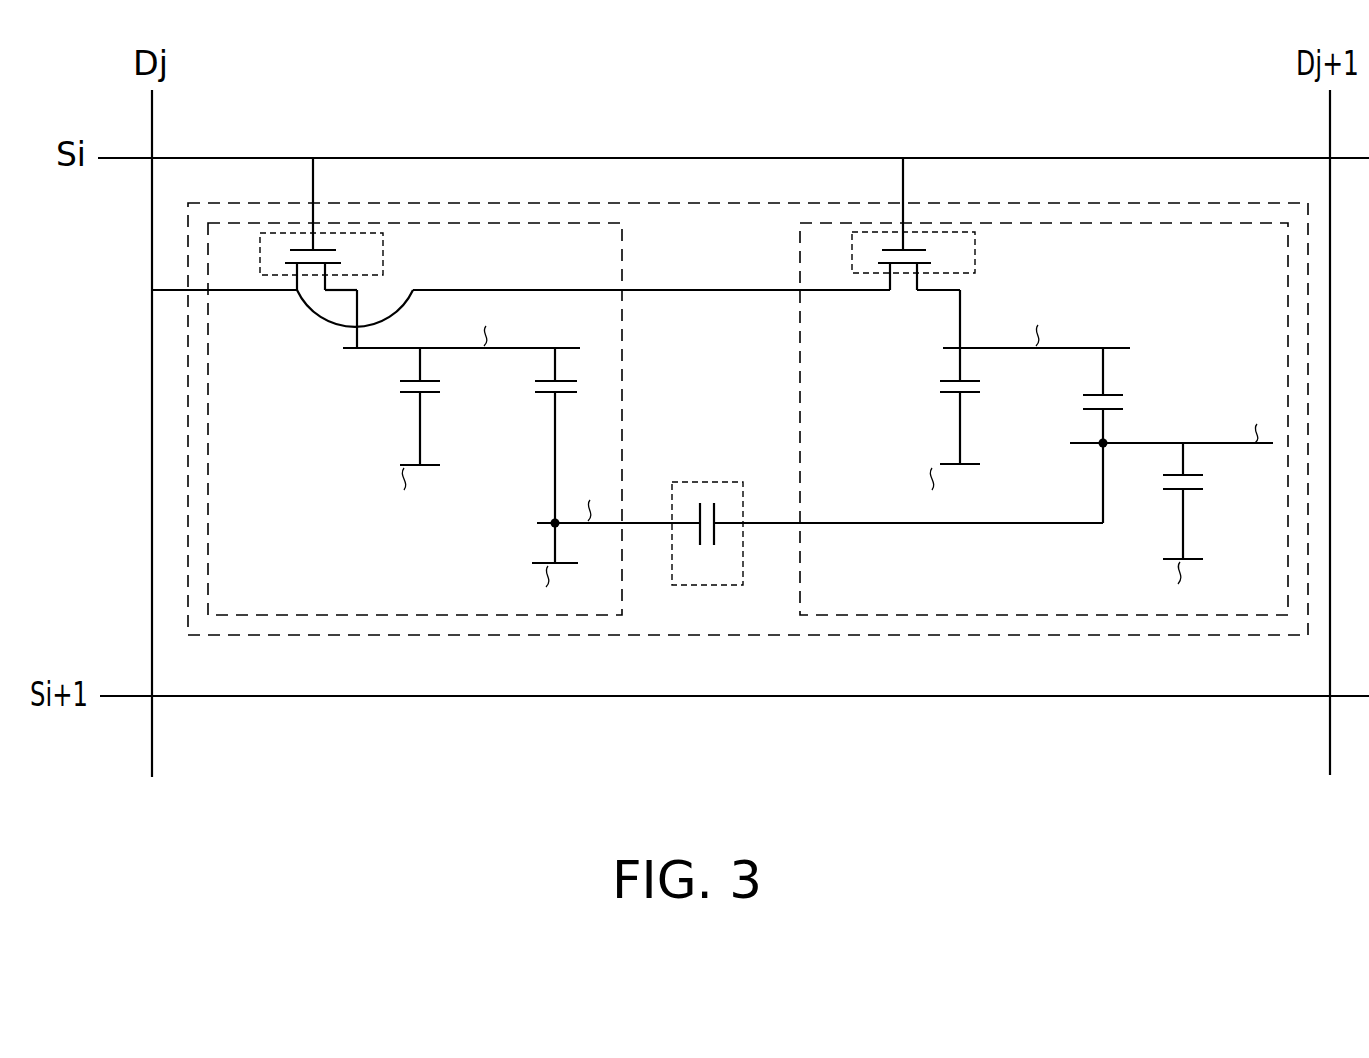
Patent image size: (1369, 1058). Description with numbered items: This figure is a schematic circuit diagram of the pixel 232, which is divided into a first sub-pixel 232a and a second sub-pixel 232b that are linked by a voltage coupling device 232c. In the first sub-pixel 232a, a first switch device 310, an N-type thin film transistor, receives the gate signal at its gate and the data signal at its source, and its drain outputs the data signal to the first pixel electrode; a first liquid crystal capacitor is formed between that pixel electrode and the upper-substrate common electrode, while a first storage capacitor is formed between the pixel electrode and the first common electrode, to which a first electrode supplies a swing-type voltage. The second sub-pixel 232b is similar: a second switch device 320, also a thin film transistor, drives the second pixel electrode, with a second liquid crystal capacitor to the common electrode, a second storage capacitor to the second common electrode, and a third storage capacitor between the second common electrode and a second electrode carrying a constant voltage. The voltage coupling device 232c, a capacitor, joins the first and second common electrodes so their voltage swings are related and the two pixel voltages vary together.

The (i, j)-th pixel 232 is at (188, 415).
The first sub-pixel 232a is at (416, 220).
The second sub-pixel 232b is at (1054, 224).
The voltage coupling device 232c is at (706, 482).
The first switch device 310 is at (385, 250).
The second switch device 320 is at (976, 248).